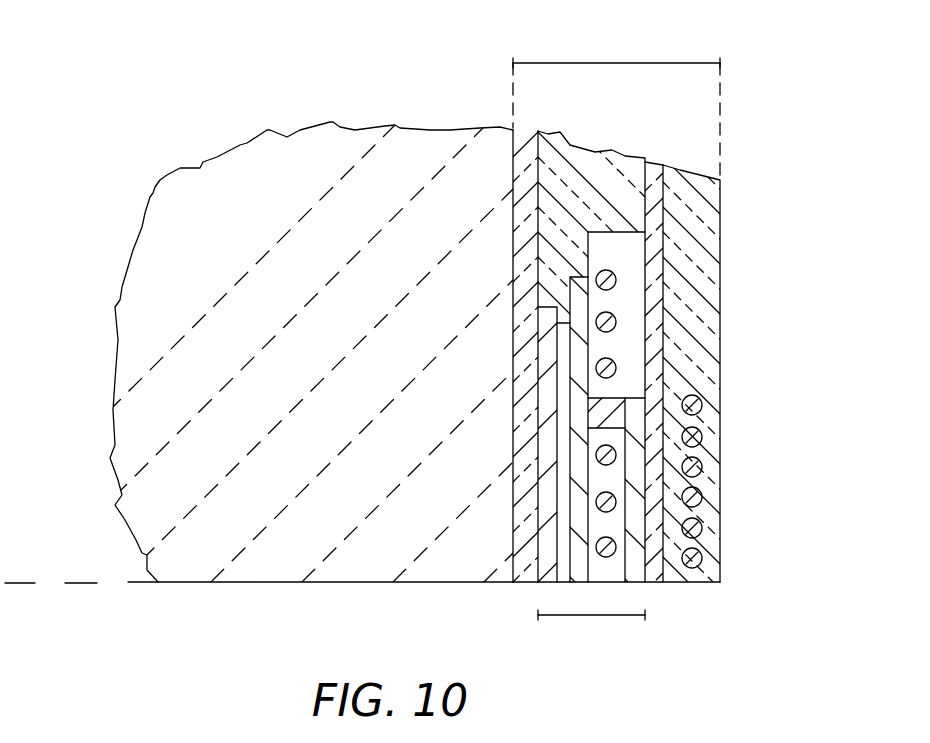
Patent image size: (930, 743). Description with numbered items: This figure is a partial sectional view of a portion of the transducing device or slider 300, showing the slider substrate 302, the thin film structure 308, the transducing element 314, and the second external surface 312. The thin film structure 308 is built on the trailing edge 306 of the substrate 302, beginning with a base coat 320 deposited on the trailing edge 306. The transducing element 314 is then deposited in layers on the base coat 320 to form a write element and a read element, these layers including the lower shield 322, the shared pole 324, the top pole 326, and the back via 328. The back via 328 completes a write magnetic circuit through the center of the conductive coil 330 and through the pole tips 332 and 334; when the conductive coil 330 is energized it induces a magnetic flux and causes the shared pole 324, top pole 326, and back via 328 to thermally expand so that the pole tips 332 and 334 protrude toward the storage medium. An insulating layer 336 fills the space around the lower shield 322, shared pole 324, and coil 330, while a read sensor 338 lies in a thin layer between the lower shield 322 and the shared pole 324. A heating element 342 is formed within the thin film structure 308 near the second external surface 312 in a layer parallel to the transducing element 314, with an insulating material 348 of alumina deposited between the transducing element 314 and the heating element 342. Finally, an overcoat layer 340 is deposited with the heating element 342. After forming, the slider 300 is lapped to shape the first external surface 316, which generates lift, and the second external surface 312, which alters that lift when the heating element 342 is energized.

The slider 300 is at (790, 143).
The slider substrate 302 is at (190, 318).
The trailing edge 306 is at (511, 543).
The thin film structure 308 is at (576, 62).
The second external surface 312 is at (693, 583).
The transducing element 314 is at (605, 617).
The first external surface 316 is at (270, 585).
The base coat 320 is at (527, 147).
The lower shield 322 is at (543, 467).
The shared pole 324 is at (582, 405).
The top pole 326 is at (633, 410).
The back via 328 is at (610, 403).
The conductive coil 330 is at (614, 553).
The pole tip 332 is at (577, 582).
The pole tip 334 is at (637, 583).
The insulating layer 336 is at (580, 182).
The read sensor 338 is at (569, 582).
The overcoat layer 340 is at (700, 272).
The heating element 342 is at (722, 457).
The insulating material 348 is at (652, 176).